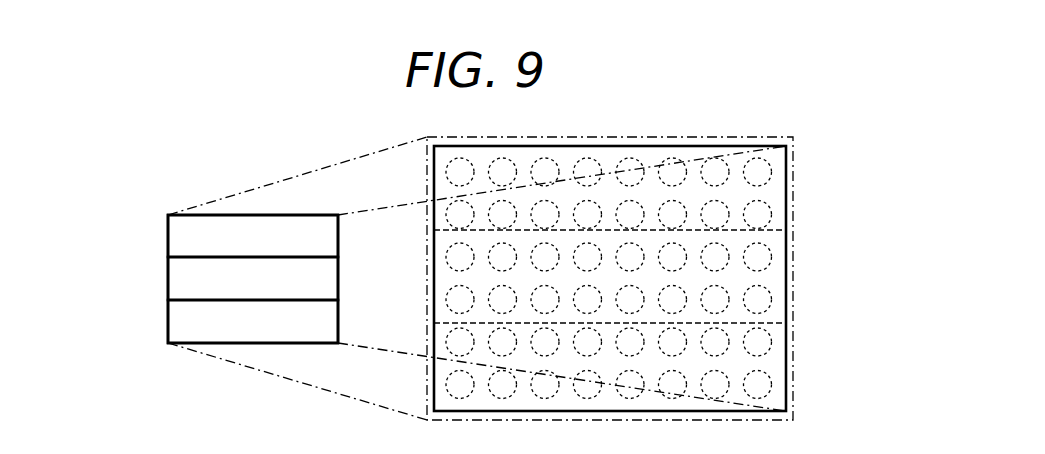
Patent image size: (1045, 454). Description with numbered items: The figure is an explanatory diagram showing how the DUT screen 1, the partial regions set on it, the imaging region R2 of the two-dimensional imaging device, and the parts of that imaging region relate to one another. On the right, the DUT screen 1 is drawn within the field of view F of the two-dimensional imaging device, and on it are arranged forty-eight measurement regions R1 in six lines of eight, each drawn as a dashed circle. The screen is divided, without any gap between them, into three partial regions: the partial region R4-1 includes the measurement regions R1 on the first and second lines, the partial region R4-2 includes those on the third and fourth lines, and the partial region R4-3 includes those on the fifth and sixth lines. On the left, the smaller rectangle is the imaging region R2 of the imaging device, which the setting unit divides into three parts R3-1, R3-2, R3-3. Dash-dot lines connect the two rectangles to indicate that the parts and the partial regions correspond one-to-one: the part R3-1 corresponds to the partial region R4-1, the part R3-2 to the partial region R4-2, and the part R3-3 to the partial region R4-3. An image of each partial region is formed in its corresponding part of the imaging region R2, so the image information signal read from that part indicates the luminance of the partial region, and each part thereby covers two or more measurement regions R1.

The DUT screen 1 is at (637, 147).
The measurement region R1 is at (753, 143).
The imaging region R2 is at (72, 213).
The part R3-1 is at (168, 236).
The part R3-2 is at (168, 279).
The part R3-3 is at (168, 321).
The partial region R4-1 is at (794, 187).
The partial region R4-2 is at (794, 277).
The partial region R4-3 is at (794, 366).
The field of view F is at (893, 170).